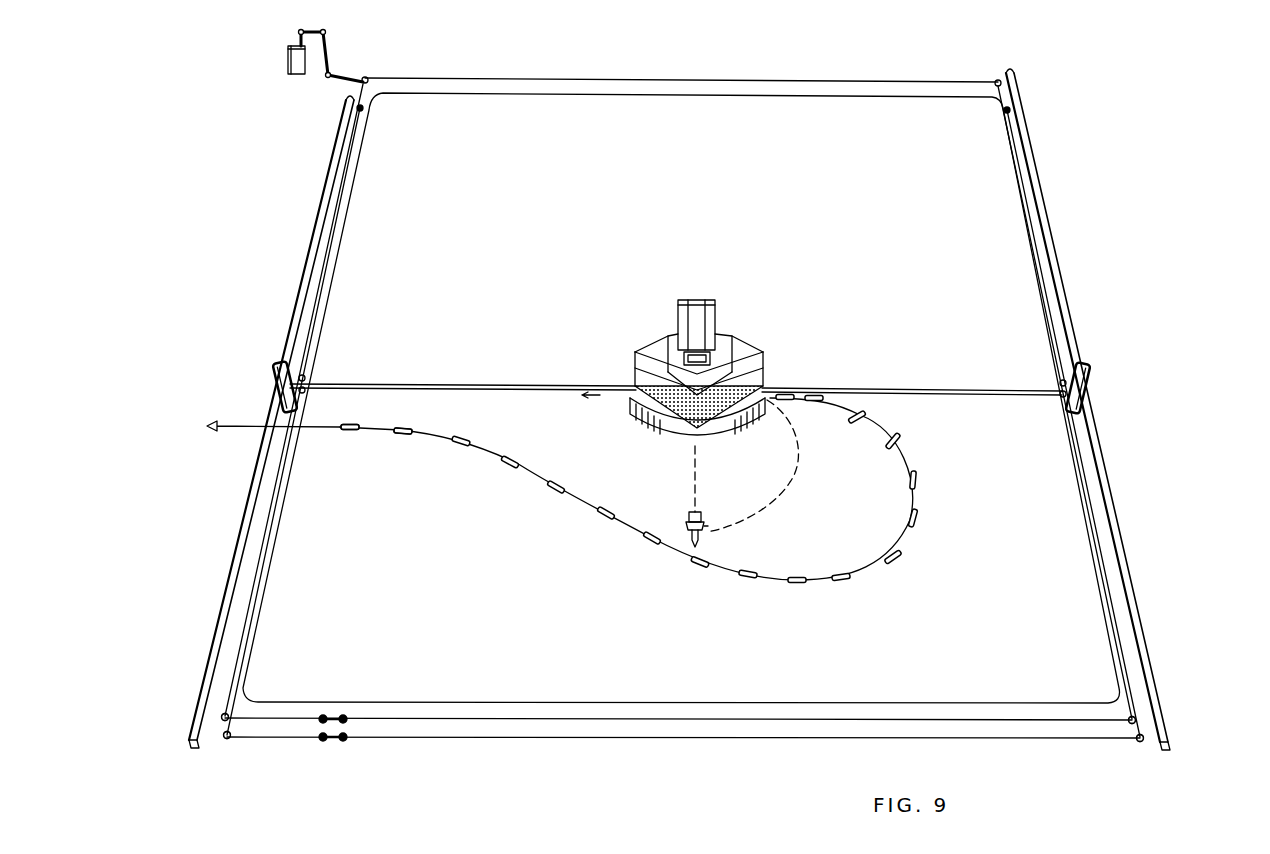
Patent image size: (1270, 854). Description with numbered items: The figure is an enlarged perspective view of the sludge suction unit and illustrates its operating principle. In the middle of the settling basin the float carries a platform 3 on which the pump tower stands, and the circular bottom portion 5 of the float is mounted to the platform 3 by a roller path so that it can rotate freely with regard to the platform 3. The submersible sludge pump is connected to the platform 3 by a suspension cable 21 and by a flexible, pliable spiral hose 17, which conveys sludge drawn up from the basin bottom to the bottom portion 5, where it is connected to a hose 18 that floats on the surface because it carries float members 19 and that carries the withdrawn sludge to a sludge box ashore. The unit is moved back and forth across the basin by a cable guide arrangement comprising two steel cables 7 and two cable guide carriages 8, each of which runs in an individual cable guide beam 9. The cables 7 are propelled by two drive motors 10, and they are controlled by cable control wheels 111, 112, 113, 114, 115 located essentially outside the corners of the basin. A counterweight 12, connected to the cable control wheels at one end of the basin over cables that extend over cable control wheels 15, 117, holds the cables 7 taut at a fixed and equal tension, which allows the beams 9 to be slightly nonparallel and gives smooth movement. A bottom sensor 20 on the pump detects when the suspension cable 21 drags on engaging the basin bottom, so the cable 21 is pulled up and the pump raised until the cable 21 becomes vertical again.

The platform 3 is at (760, 364).
The bottom portion of the float 5 is at (658, 432).
The cables 7 is at (385, 380).
The cable guide carriages 8 is at (277, 388).
The cable guide beam 9 is at (317, 225).
The drive motors 10 is at (325, 745).
The counterweight 12 is at (284, 74).
The cable control wheel 15 is at (374, 80).
The spiral hose 17 is at (800, 473).
The hose 18 is at (373, 430).
The float members 19 is at (408, 435).
The bottom sensor 20 is at (703, 548).
The cable 21 is at (693, 488).
The cable control wheel 111 is at (358, 110).
The cable control wheel 112 is at (222, 714).
The cable control wheel 113 is at (228, 741).
The cable control wheel 114 is at (1140, 742).
The cable control wheel 115 is at (1140, 720).
The cable control wheel 117 is at (1013, 91).